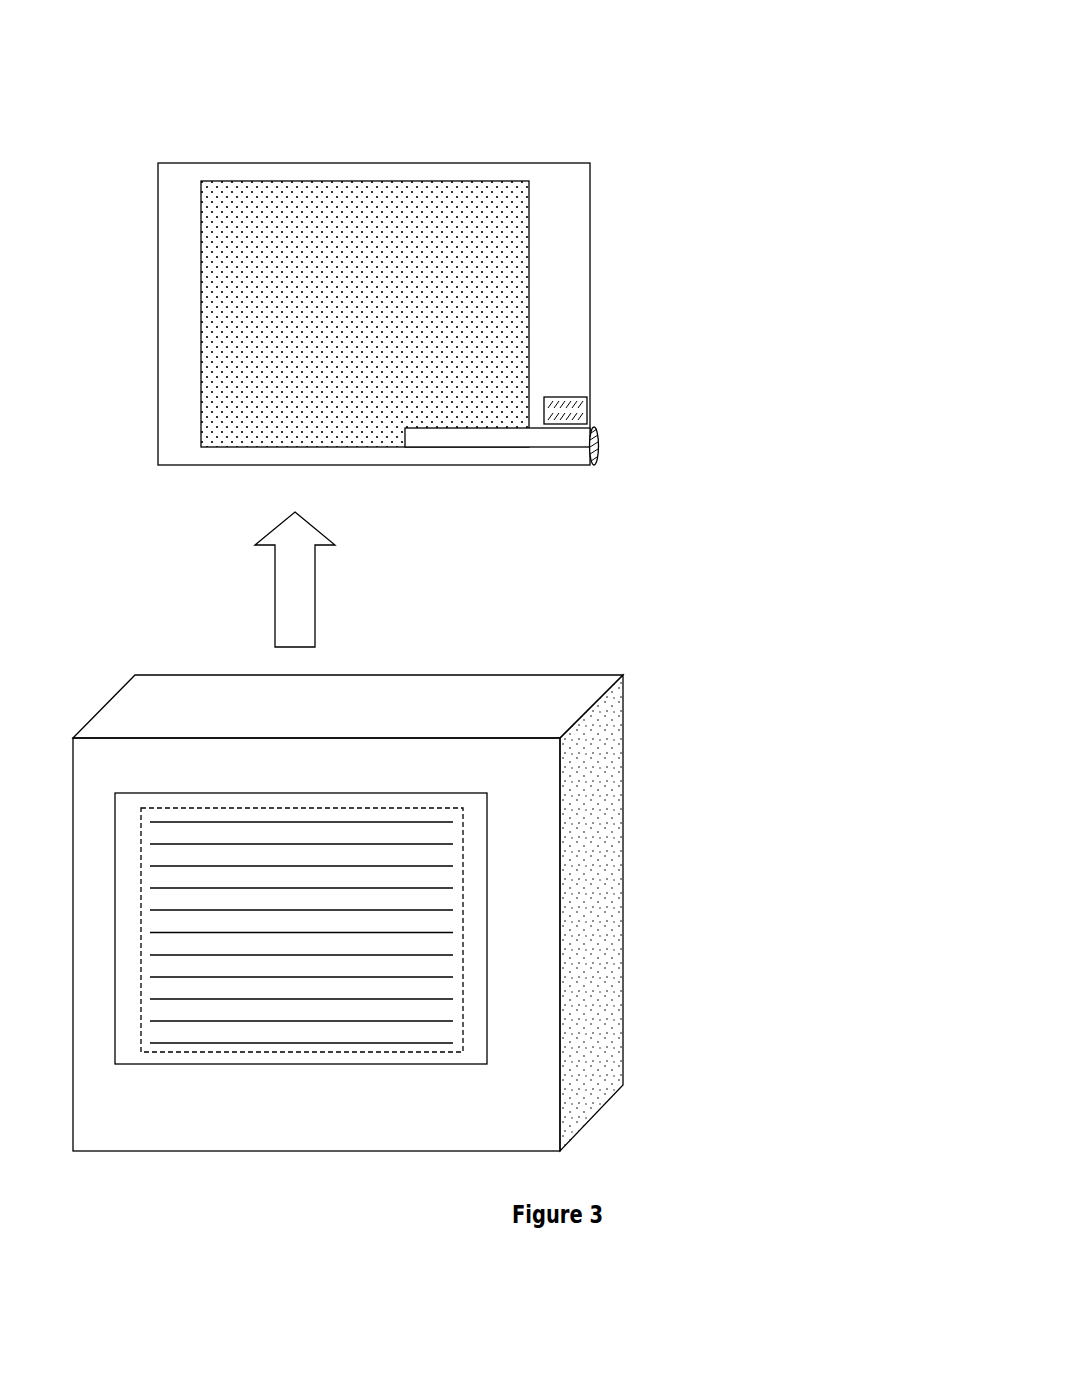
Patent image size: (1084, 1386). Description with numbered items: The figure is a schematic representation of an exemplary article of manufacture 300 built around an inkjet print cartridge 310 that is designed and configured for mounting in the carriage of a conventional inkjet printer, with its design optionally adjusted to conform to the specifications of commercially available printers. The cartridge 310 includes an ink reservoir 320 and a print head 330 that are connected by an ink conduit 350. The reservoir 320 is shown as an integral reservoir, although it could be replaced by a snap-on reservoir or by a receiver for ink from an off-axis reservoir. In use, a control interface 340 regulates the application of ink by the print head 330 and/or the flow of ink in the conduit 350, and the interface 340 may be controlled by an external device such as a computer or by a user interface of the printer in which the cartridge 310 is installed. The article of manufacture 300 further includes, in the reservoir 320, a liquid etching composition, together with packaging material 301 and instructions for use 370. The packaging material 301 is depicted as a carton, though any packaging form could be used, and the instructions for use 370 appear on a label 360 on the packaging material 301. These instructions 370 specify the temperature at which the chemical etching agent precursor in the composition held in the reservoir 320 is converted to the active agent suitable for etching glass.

The article of manufacture 300 is at (232, 124).
The inkjet print cartridge 310 is at (559, 229).
The ink reservoir 320 is at (403, 228).
The print head 330 is at (597, 458).
The control interface 340 is at (562, 413).
The ink conduit 350 is at (425, 436).
The packaging material 301 is at (528, 876).
The label 360 is at (487, 973).
The instructions for use 370 is at (465, 828).